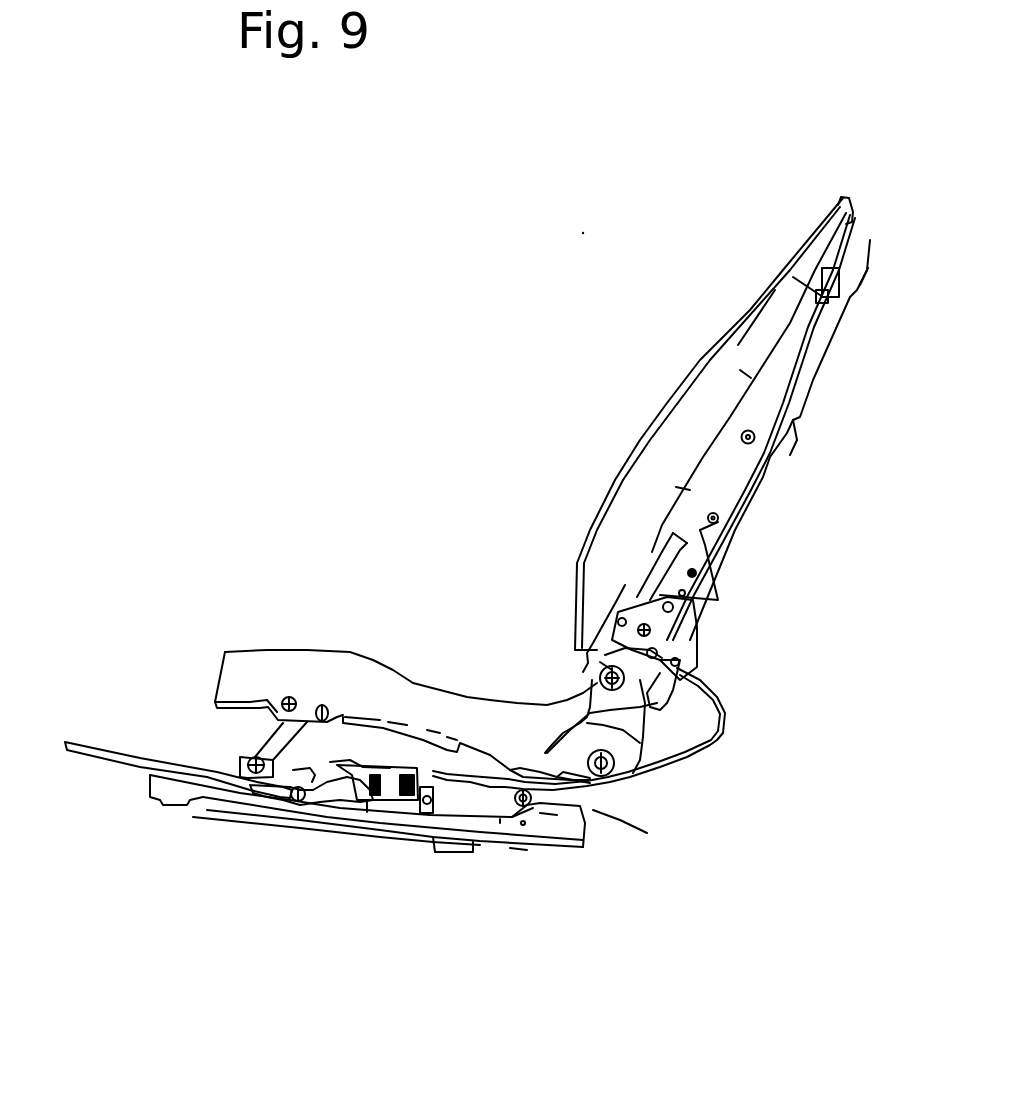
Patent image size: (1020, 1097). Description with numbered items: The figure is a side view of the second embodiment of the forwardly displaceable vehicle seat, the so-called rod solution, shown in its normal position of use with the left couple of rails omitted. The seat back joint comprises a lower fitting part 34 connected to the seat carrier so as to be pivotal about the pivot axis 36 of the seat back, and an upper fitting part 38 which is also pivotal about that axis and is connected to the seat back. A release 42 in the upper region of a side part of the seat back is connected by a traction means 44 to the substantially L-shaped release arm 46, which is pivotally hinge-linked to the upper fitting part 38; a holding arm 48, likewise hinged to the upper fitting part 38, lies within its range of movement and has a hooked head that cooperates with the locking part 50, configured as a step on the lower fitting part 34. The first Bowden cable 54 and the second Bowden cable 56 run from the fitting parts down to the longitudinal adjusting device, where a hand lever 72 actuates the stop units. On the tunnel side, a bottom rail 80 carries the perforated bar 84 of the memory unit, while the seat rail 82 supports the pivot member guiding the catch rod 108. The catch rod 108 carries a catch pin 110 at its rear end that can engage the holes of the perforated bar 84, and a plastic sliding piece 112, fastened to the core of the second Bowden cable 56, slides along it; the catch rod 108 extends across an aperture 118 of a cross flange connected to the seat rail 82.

The lower fitting part 34 is at (406, 705).
The pivot axis 36 is at (539, 670).
The upper fitting part 38 is at (607, 559).
The release 42 is at (725, 266).
The traction means 44 is at (734, 423).
The release arm 46 is at (572, 586).
The holding arm 48 is at (722, 695).
The locking part 50 is at (536, 603).
The first Bowden cable 54 is at (626, 738).
The second Bowden cable 56 is at (651, 789).
The hand lever 72 is at (173, 810).
The bottom rail 80 is at (566, 862).
The seat rail 82 is at (677, 846).
The perforated bar 84 is at (473, 886).
The catch rod 108 is at (366, 846).
The catch pin 110 is at (388, 877).
The sliding piece 112 is at (344, 859).
The aperture 118 is at (320, 873).